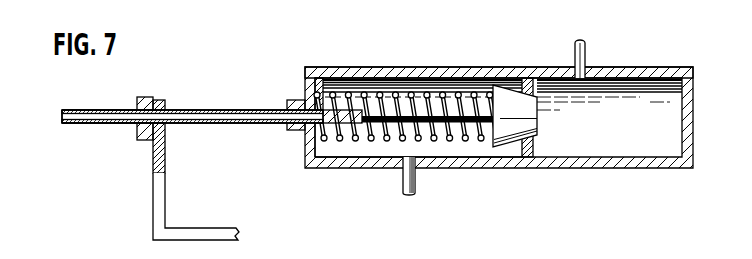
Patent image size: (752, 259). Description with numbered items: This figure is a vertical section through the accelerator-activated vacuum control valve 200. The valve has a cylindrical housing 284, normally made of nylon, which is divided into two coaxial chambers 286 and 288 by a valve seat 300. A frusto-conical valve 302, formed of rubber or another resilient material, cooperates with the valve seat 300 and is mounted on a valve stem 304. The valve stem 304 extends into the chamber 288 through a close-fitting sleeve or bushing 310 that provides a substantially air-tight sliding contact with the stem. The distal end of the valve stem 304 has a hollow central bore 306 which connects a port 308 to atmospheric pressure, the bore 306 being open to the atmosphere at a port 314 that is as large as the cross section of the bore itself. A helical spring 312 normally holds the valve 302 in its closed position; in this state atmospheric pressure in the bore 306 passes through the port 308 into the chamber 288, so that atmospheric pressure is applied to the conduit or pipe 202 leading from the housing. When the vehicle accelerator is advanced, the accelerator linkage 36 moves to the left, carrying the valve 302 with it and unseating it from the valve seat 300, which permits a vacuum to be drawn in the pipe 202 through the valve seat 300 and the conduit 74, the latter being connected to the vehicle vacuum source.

The accelerator linkage 36 is at (207, 233).
The conduit 74 is at (583, 52).
The accelerator-activated vacuum control valve 200 is at (648, 170).
The conduit or pipe 202 is at (415, 187).
The cylindrical housing 284 is at (647, 75).
The chamber 286 is at (646, 143).
The chamber 288 is at (383, 148).
The valve seat 300 is at (562, 74).
The valve 302 is at (540, 127).
The valve stem 304 is at (222, 109).
The hollow central bore 306 is at (100, 91).
The port 308 is at (320, 88).
The sleeve or bushing 310 is at (300, 100).
The helical spring 312 is at (395, 95).
The port 314 is at (62, 116).